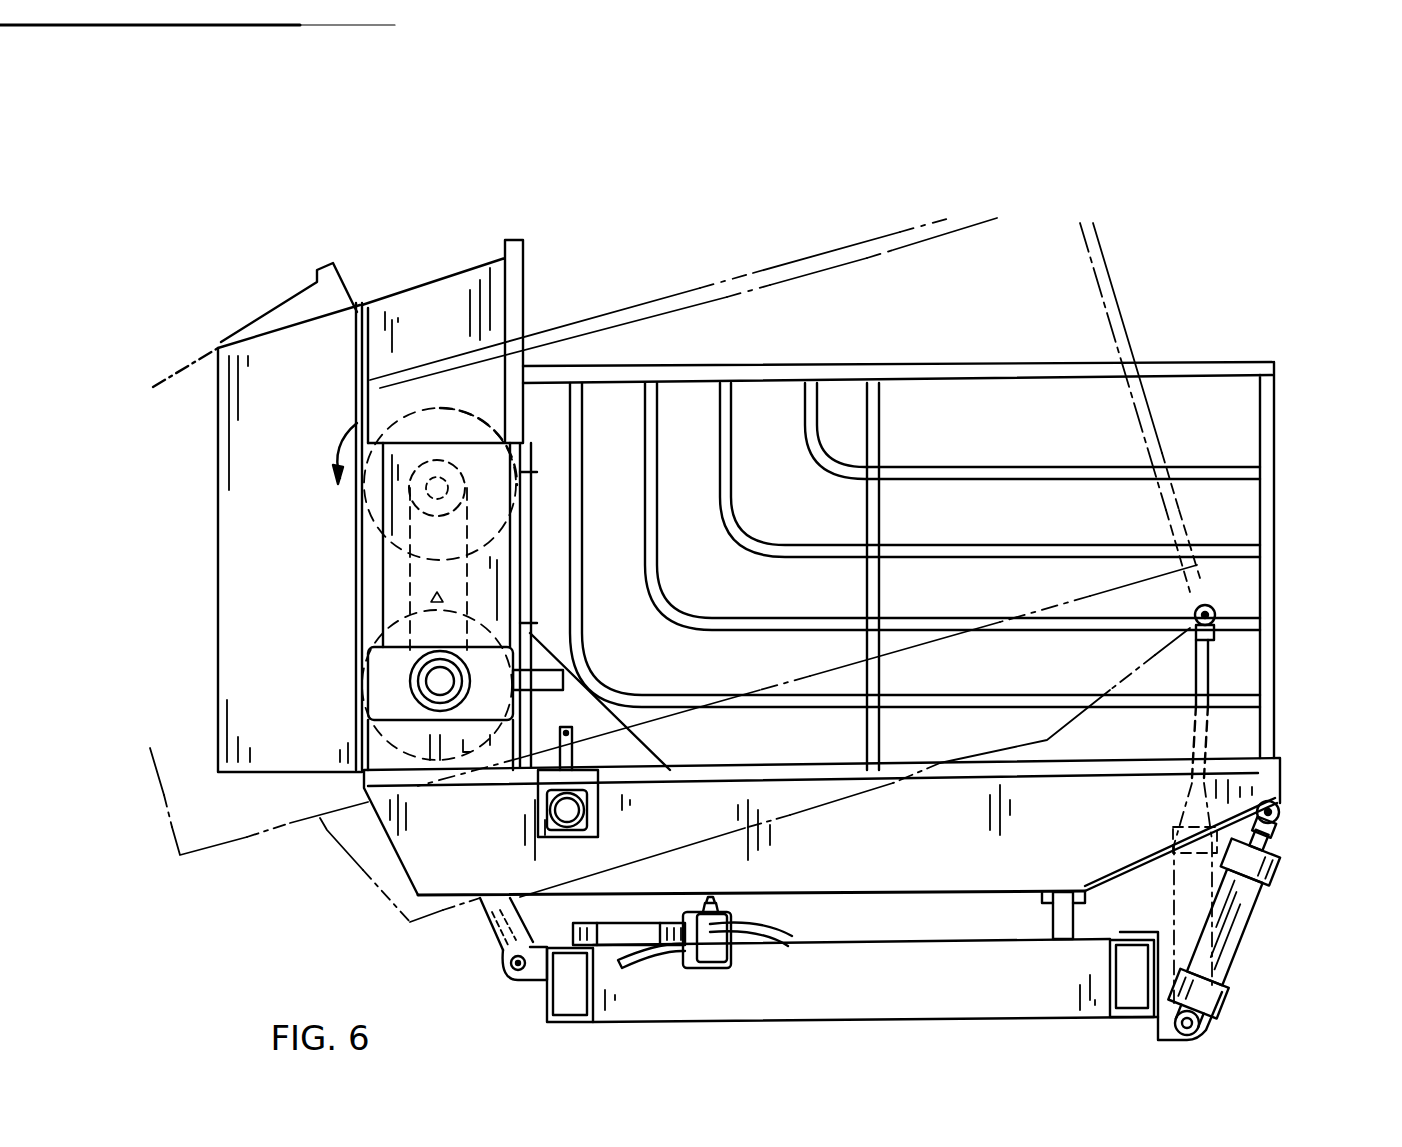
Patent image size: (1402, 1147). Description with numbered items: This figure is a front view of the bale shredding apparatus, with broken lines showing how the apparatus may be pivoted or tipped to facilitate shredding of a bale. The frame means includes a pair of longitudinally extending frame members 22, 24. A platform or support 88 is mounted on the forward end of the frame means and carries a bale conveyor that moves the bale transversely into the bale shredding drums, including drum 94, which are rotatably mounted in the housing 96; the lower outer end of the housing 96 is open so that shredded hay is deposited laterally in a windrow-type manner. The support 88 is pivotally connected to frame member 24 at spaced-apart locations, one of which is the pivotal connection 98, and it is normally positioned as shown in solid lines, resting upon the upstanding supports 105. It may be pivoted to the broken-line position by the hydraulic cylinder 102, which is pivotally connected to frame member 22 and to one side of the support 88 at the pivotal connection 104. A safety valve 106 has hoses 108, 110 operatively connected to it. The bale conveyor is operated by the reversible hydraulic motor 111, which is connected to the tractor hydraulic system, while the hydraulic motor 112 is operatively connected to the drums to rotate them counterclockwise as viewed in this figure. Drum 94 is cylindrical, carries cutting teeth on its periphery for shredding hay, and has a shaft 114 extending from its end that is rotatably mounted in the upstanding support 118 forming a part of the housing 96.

The frame member 22 is at (1123, 977).
The frame member 24 is at (562, 995).
The platform or support 88 is at (488, 860).
The bale shredding drum 94 is at (455, 400).
The housing 96 is at (447, 262).
The pivotal connection location 98 is at (512, 965).
The hydraulic cylinder 102 is at (1238, 913).
The pivotal connection 104 is at (1280, 815).
The upstanding support 105 is at (1060, 917).
The safety valve 106 is at (713, 915).
The hose 108 is at (650, 957).
The hose 110 is at (766, 935).
The reversible hydraulic motor 111 is at (583, 810).
The hydraulic motor 112 is at (415, 676).
The shaft 114 is at (408, 492).
The upstanding support 118 is at (428, 345).